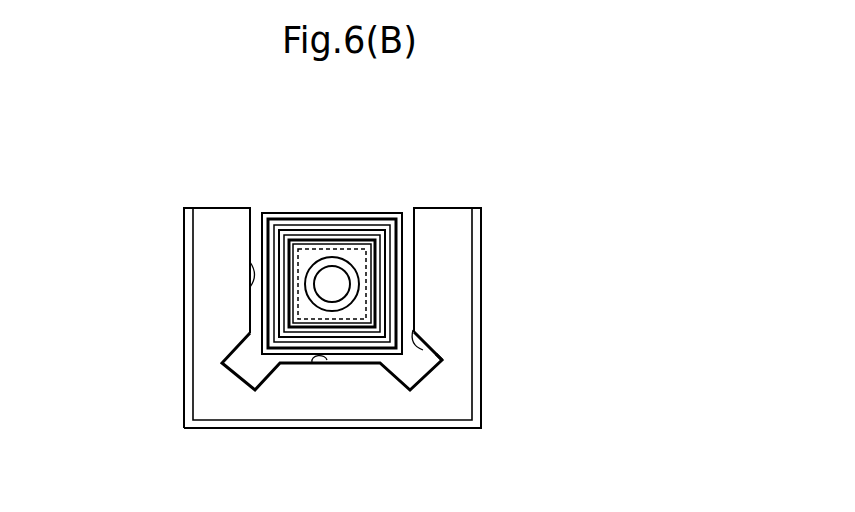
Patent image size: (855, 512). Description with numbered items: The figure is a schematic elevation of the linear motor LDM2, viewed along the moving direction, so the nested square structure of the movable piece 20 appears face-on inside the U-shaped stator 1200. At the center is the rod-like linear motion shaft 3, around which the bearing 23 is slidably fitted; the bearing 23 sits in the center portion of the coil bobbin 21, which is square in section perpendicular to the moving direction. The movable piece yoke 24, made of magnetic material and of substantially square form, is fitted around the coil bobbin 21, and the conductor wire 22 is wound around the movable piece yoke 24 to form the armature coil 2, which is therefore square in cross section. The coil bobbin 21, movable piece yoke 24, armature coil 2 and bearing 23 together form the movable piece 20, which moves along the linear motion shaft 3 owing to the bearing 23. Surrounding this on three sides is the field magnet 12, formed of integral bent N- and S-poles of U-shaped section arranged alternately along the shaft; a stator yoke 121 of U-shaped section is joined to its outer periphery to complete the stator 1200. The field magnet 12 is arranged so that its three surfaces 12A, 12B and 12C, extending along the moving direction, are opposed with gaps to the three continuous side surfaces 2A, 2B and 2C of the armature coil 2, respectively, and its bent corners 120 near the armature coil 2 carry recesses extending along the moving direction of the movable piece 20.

The linear motor LDM2 is at (383, 308).
The stator 1200 is at (318, 324).
The field magnet 12 is at (318, 343).
The surface 12A is at (327, 360).
The surface 12B is at (252, 282).
The surface 12C is at (443, 360).
The bent corners 120 is at (255, 363).
The stator yoke 121 is at (227, 423).
The movable piece 20 is at (368, 308).
The armature coil 2 is at (338, 310).
The side surface 2A is at (350, 353).
The side surface 2B is at (262, 243).
The side surface 2C is at (402, 232).
The conductor wire 22 is at (352, 222).
The movable piece yoke 24 is at (370, 320).
The coil bobbin 21 is at (424, 263).
The bearing 23 is at (353, 292).
The linear motion shaft 3 is at (337, 277).